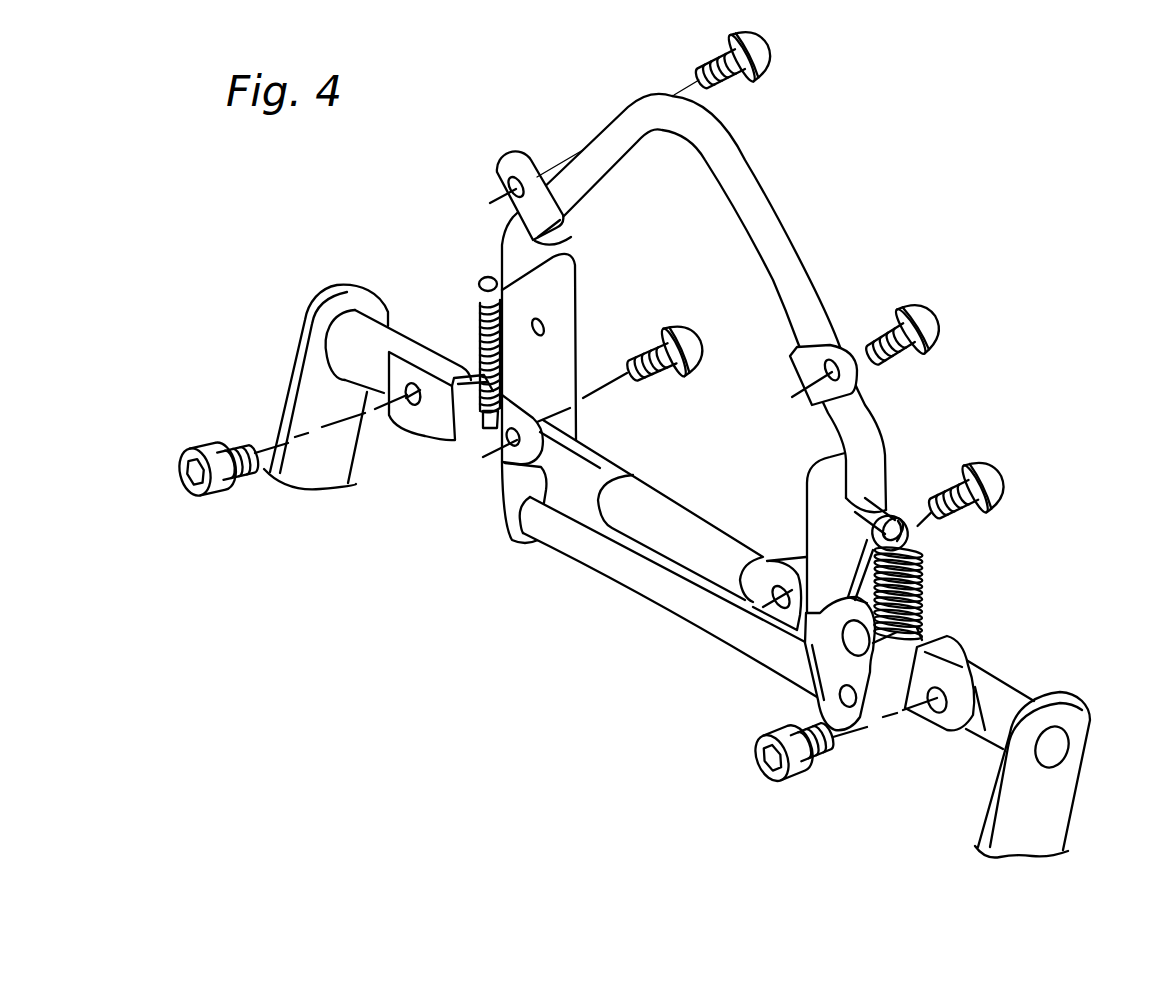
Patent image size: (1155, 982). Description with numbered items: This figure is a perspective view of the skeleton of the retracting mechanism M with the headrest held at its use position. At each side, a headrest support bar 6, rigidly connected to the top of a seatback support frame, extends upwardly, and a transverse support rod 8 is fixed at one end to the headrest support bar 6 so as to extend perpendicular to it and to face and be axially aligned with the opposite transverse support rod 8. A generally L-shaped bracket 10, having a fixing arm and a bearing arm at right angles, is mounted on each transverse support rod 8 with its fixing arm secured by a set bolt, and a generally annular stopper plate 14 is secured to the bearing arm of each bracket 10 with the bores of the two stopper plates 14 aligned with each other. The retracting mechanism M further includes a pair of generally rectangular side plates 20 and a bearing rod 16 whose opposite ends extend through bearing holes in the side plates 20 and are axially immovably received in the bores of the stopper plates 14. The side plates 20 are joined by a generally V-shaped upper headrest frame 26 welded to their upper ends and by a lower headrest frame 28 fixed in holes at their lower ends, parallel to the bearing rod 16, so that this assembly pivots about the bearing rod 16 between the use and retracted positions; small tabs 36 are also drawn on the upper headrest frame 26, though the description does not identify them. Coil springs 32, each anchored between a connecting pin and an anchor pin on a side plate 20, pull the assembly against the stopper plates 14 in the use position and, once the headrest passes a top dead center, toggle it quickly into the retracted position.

The retracting mechanism M is at (830, 118).
The headrest support bar 6 is at (297, 378).
The transverse support rod 8 is at (391, 332).
The L-shaped bracket 10 is at (423, 428).
The annular stopper plate 14 is at (825, 670).
The bearing rod 16 is at (658, 502).
The side plate 20 is at (569, 322).
The upper headrest frame 26 is at (768, 211).
The lower headrest frame 28 is at (602, 565).
The coil spring 32 is at (478, 345).
The mounting tab 36 is at (500, 167).